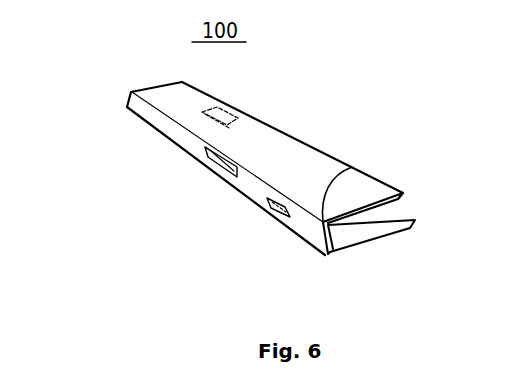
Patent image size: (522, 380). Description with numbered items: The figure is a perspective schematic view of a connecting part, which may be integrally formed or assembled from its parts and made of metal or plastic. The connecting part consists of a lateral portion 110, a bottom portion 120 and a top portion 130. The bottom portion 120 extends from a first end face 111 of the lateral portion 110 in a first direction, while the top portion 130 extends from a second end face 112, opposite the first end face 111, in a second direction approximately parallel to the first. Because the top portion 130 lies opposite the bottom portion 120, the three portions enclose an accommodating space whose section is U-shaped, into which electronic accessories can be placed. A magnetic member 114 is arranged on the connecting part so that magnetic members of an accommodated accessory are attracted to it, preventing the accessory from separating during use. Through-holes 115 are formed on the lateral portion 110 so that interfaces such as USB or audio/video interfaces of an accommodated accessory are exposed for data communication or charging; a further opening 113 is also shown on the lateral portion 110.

The lateral portion 110 is at (158, 130).
The first end face 111 is at (330, 256).
The second end face 112 is at (352, 167).
The small slot 113 is at (274, 205).
The magnetic member 114 is at (202, 113).
The through-holes 115 is at (207, 157).
The bottom portion 120 is at (363, 242).
The top portion 130 is at (247, 142).